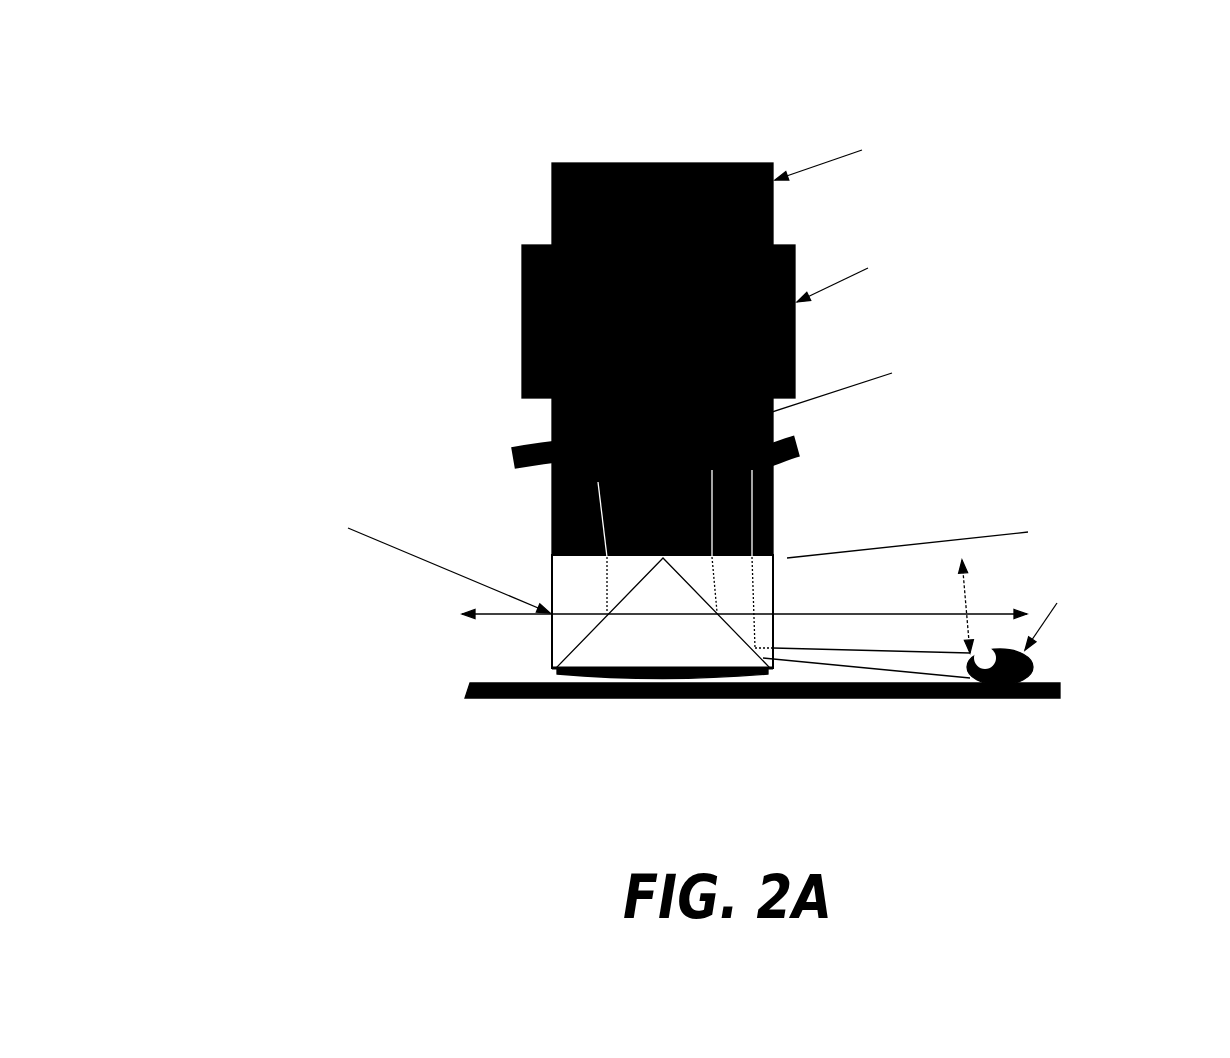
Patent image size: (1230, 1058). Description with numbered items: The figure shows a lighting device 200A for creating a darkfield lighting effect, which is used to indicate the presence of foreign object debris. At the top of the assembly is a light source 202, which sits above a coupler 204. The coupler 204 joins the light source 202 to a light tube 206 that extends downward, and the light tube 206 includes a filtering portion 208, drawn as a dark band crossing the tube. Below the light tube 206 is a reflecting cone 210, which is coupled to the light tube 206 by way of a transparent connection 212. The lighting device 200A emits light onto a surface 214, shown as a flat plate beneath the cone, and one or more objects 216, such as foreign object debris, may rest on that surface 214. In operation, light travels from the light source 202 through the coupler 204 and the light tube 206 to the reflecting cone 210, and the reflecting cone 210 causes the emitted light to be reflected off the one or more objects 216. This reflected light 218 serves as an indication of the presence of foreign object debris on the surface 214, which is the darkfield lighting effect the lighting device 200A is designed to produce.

The lighting device 200A is at (1073, 125).
The light source 202 is at (553, 176).
The coupler 204 is at (523, 302).
The light tube 206 is at (552, 430).
The filtering portion 208 is at (687, 450).
The reflecting cone 210 is at (597, 628).
The transparent connection 212 is at (552, 655).
The surface 214 is at (470, 688).
The object 216 is at (1032, 662).
The reflected light 218 is at (858, 603).